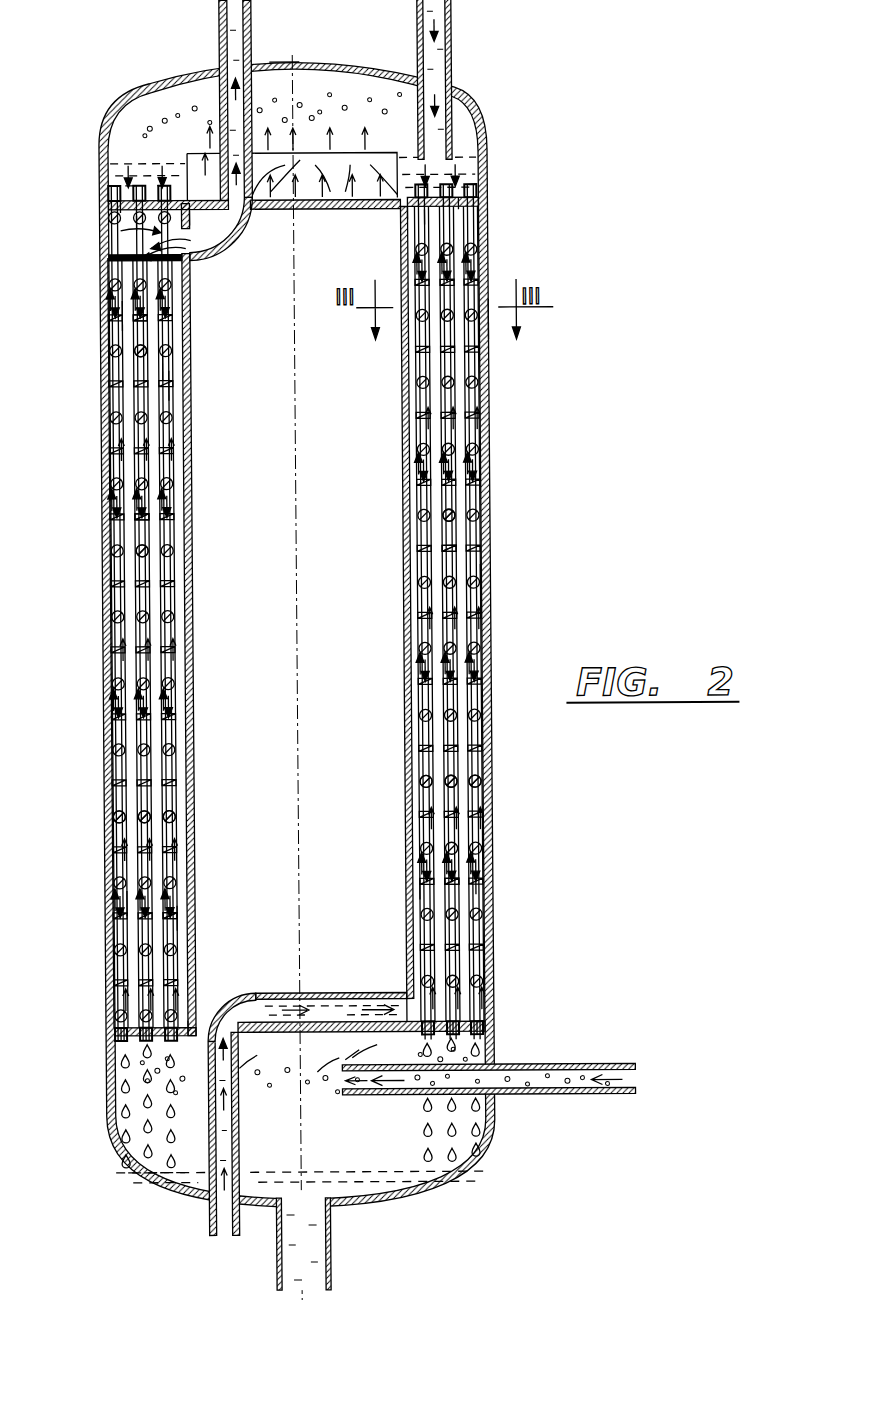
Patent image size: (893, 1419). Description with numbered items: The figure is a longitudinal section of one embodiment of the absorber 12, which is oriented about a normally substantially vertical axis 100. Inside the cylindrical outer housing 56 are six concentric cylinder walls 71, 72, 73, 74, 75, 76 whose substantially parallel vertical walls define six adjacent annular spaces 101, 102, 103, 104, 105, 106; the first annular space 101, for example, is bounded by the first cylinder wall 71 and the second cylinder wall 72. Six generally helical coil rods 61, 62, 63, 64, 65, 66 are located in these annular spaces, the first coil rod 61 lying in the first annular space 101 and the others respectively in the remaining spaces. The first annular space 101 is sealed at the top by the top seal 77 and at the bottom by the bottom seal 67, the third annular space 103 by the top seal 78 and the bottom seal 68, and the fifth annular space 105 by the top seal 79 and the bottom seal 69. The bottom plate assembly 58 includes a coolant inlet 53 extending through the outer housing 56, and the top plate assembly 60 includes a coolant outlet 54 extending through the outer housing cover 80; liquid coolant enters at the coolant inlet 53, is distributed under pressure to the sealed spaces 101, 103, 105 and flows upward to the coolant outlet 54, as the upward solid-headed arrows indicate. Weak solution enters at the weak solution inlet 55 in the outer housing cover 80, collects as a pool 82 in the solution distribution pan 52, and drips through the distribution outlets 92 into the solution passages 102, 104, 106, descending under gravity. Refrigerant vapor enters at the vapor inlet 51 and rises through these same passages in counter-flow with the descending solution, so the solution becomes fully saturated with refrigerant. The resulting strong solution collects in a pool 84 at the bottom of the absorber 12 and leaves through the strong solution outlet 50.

The absorber 12 is at (512, 258).
The strong solution outlet 50 is at (342, 1266).
The vapor inlet 51 is at (545, 1067).
The solution distribution pan 52 is at (458, 185).
The coolant inlet 53 is at (204, 1230).
The coolant outlet 54 is at (221, 23).
The weak solution inlet 55 is at (447, 39).
The outer housing 56 is at (480, 400).
The bottom plate assembly 58 is at (282, 1030).
The top plate assembly 60 is at (288, 207).
The first generally helical coil rod 61 is at (418, 890).
The second generally helical coil rod 62 is at (430, 782).
The third generally helical coil rod 63 is at (455, 892).
The fourth generally helical coil rod 64 is at (458, 787).
The fifth generally helical coil rod 65 is at (470, 885).
The sixth generally helical coil rod 66 is at (480, 780).
The bottom seal 67 is at (415, 1022).
The bottom seal 68 is at (438, 1032).
The bottom seal 69 is at (468, 1028).
The first cylinder wall 71 is at (422, 490).
The second cylinder wall 72 is at (432, 520).
The third cylinder wall 73 is at (460, 515).
The fourth cylinder wall 74 is at (465, 530).
The fifth cylinder wall 75 is at (470, 545).
The sixth cylinder wall 76 is at (480, 575).
The top seal 77 is at (410, 205).
The top seal 78 is at (428, 212).
The top seal 79 is at (458, 205).
The outer housing cover 80 is at (284, 60).
The pool 82 is at (140, 160).
The pool 84 is at (190, 1170).
The distribution outlets 92 is at (160, 190).
The vertical axis 100 is at (300, 458).
The first annular space 101 is at (168, 385).
The second annular space 102 is at (157, 368).
The third annular space 103 is at (153, 349).
The fourth annular space 104 is at (140, 333).
The fifth annular space 105 is at (128, 315).
The sixth annular space 106 is at (113, 300).